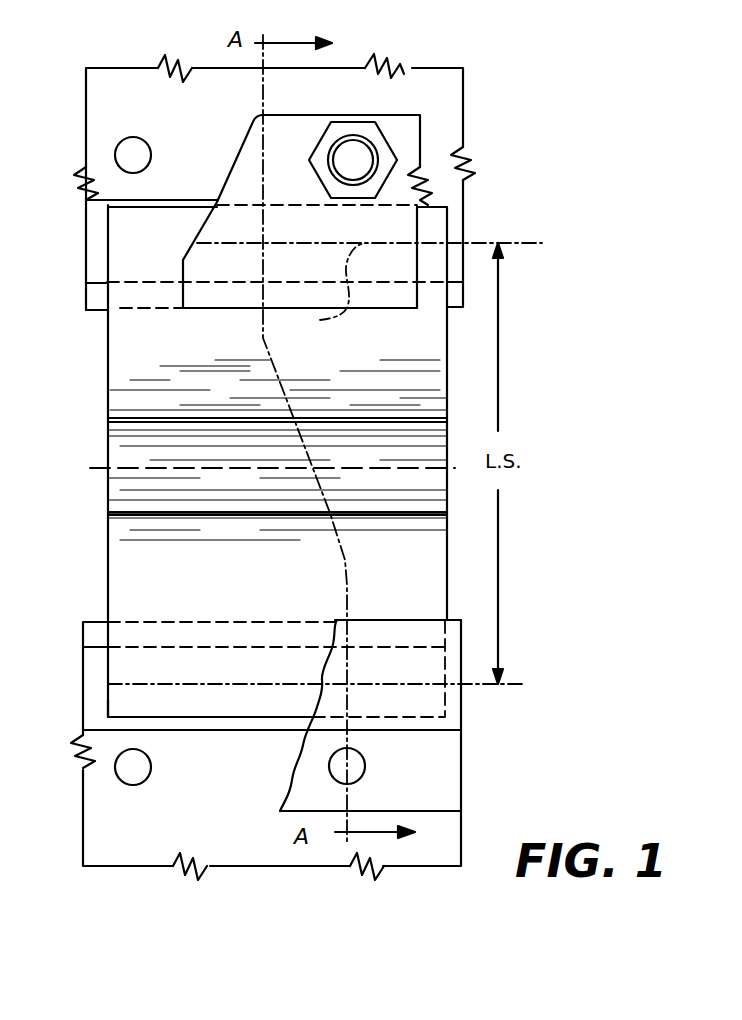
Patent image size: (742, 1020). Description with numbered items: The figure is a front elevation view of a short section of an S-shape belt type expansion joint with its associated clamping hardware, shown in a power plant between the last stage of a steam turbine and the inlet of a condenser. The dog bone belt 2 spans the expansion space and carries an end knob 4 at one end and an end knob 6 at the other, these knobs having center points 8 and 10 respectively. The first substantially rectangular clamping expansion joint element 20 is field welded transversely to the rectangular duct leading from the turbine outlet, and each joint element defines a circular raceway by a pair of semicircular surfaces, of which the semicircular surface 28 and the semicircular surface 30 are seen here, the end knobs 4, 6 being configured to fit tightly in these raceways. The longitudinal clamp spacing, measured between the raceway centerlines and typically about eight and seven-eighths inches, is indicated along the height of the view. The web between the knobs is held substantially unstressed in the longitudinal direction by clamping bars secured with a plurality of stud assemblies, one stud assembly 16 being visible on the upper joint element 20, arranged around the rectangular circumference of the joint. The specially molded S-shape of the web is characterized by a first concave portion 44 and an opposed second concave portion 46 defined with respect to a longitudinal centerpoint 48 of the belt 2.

The dog bone belt 2 is at (125, 379).
The end knob 4 is at (197, 243).
The end knob 6 is at (255, 693).
The center point 8 is at (327, 292).
The center point 10 is at (367, 683).
The stud assembly 16 is at (360, 158).
The first clamping expansion joint element 20 is at (204, 122).
The semicircular surface 28 is at (95, 265).
The semicircular surface 30 is at (95, 688).
The first concave portion 44 is at (369, 400).
The second concave portion 46 is at (248, 537).
The longitudinal centerpoint 48 is at (240, 468).